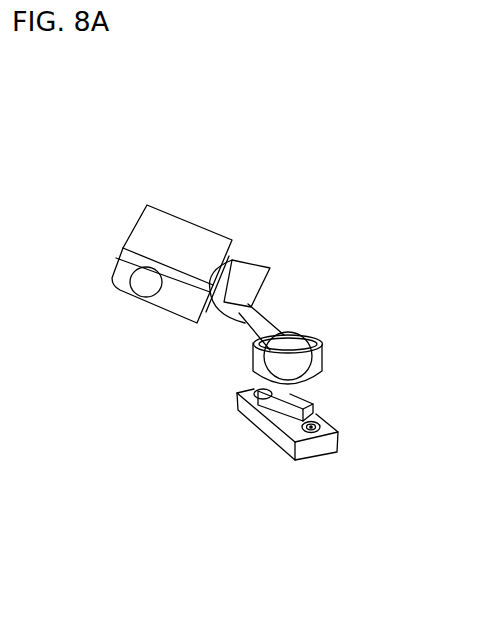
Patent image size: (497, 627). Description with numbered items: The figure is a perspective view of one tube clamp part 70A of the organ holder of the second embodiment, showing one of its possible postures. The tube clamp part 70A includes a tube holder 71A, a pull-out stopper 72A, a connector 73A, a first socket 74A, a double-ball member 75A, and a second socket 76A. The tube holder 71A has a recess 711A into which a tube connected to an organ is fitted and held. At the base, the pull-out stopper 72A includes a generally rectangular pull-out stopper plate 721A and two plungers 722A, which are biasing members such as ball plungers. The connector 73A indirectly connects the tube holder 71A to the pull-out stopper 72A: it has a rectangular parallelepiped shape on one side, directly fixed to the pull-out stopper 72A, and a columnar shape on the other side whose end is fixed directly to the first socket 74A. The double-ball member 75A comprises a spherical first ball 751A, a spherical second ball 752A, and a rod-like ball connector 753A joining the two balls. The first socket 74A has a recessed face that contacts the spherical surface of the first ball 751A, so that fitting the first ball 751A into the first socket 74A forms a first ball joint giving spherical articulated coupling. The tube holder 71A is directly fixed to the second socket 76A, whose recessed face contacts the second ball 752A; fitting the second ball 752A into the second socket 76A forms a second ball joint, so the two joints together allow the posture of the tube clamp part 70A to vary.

The tube clamp part 70A is at (226, 167).
The tube holder 71A is at (155, 236).
The recess 711A is at (138, 277).
The pull-out stopper 72A is at (270, 454).
The pull-out stopper plate 721A is at (323, 445).
The plunger 722A is at (321, 427).
The connector 73A is at (244, 419).
The first socket 74A is at (289, 352).
The double-ball member 75A is at (247, 337).
The first ball 751A is at (312, 342).
The second ball 752A is at (270, 289).
The ball connector 753A is at (268, 316).
The second socket 76A is at (251, 272).